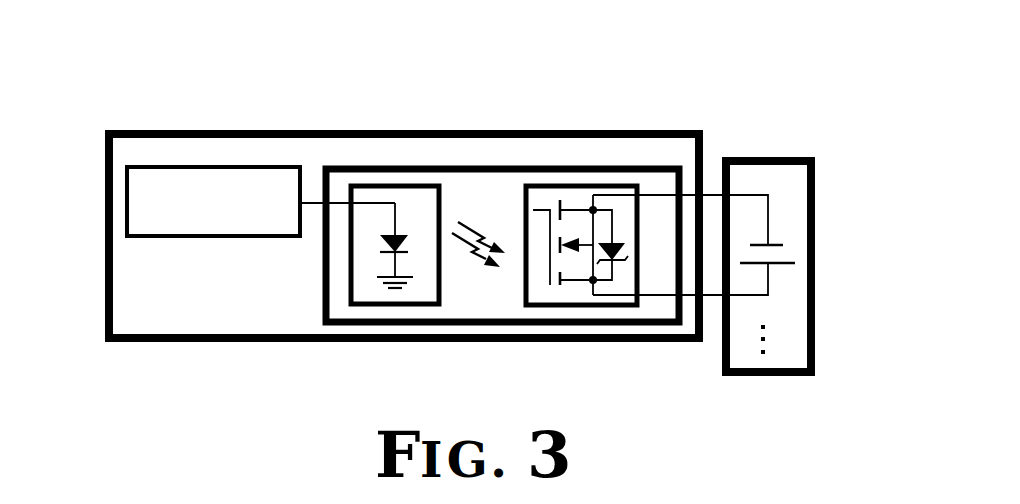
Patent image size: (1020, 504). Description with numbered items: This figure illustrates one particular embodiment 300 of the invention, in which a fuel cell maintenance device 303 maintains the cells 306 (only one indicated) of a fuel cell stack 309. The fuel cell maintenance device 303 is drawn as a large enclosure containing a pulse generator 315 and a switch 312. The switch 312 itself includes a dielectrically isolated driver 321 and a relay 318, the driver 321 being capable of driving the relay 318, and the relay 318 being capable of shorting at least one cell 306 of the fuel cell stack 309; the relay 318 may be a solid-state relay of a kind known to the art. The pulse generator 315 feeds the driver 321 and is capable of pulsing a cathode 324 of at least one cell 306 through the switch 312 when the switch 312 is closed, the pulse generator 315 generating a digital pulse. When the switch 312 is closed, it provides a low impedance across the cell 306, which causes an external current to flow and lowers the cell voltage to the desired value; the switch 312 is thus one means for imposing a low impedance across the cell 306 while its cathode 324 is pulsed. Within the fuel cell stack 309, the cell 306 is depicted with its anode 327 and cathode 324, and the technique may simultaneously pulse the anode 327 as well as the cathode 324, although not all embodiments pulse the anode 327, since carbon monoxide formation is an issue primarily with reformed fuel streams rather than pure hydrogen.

The embodiment 300 is at (124, 50).
The fuel cell maintenance device 303 is at (107, 131).
The pulse generator 315 is at (215, 165).
The switch 312 is at (505, 167).
The dielectrically isolated driver 321 is at (398, 183).
The relay 318 is at (580, 185).
The fuel cell stack 309 is at (816, 244).
The cell 306 is at (815, 254).
The anode 327 is at (782, 245).
The cathode 324 is at (783, 262).